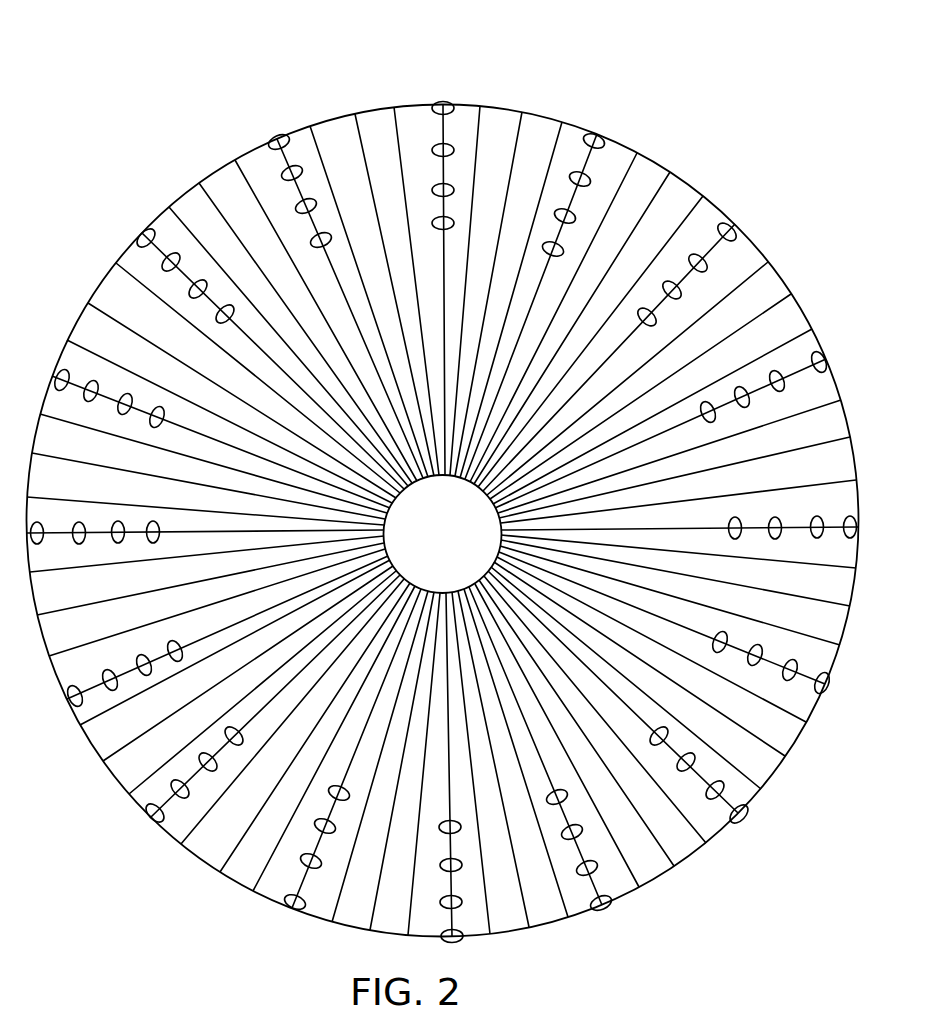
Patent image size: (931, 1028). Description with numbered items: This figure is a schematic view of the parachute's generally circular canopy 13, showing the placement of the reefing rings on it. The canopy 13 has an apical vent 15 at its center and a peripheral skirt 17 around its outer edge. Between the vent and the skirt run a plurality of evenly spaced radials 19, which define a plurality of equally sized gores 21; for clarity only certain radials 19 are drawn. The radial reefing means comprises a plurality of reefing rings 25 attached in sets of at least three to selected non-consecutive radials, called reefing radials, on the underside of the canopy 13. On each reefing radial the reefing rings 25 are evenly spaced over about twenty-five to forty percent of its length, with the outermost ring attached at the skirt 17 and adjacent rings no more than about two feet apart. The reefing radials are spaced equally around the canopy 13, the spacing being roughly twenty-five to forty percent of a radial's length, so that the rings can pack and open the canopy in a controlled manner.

The canopy 13 is at (296, 96).
The apical vent 15 is at (458, 560).
The peripheral skirt 17 is at (852, 456).
The radials 19 is at (692, 226).
The gores 21 is at (540, 128).
The reefing rings 25 is at (157, 427).